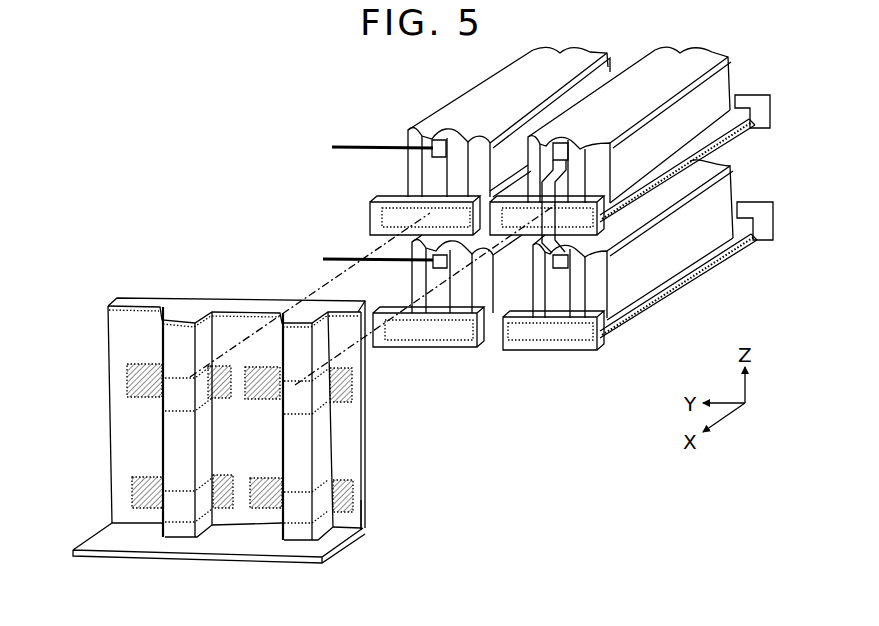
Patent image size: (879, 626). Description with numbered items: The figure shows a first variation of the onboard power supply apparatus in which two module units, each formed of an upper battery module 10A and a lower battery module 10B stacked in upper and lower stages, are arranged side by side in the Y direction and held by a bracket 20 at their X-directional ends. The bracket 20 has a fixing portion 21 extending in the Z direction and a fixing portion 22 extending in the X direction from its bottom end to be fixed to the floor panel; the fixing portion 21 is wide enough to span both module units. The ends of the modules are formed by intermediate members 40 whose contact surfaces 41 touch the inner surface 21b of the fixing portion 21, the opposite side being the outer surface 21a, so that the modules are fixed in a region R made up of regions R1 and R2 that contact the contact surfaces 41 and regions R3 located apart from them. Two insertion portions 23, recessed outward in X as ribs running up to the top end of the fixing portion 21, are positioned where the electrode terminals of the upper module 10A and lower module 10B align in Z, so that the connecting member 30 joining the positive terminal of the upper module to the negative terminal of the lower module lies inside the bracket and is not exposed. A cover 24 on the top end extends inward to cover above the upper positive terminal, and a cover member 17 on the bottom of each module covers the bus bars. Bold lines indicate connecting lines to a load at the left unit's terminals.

The bracket 20 is at (231, 429).
The fixing portion 21 is at (225, 407).
The outer surface 21a is at (118, 353).
The inner surface 21b is at (365, 522).
The fixing portion 22 is at (103, 541).
The insertion portion 23 is at (175, 431).
The cover 24 is at (180, 303).
The region R is at (127, 393).
The region R1 is at (127, 380).
The region R2 is at (220, 373).
The region R3 is at (178, 403).
The upper battery module 10A is at (733, 74).
The lower battery module 10B is at (738, 182).
The cover member 17 is at (740, 143).
The connecting member 30 is at (543, 228).
The intermediate member 40 is at (370, 210).
The contact surface 41 is at (372, 229).